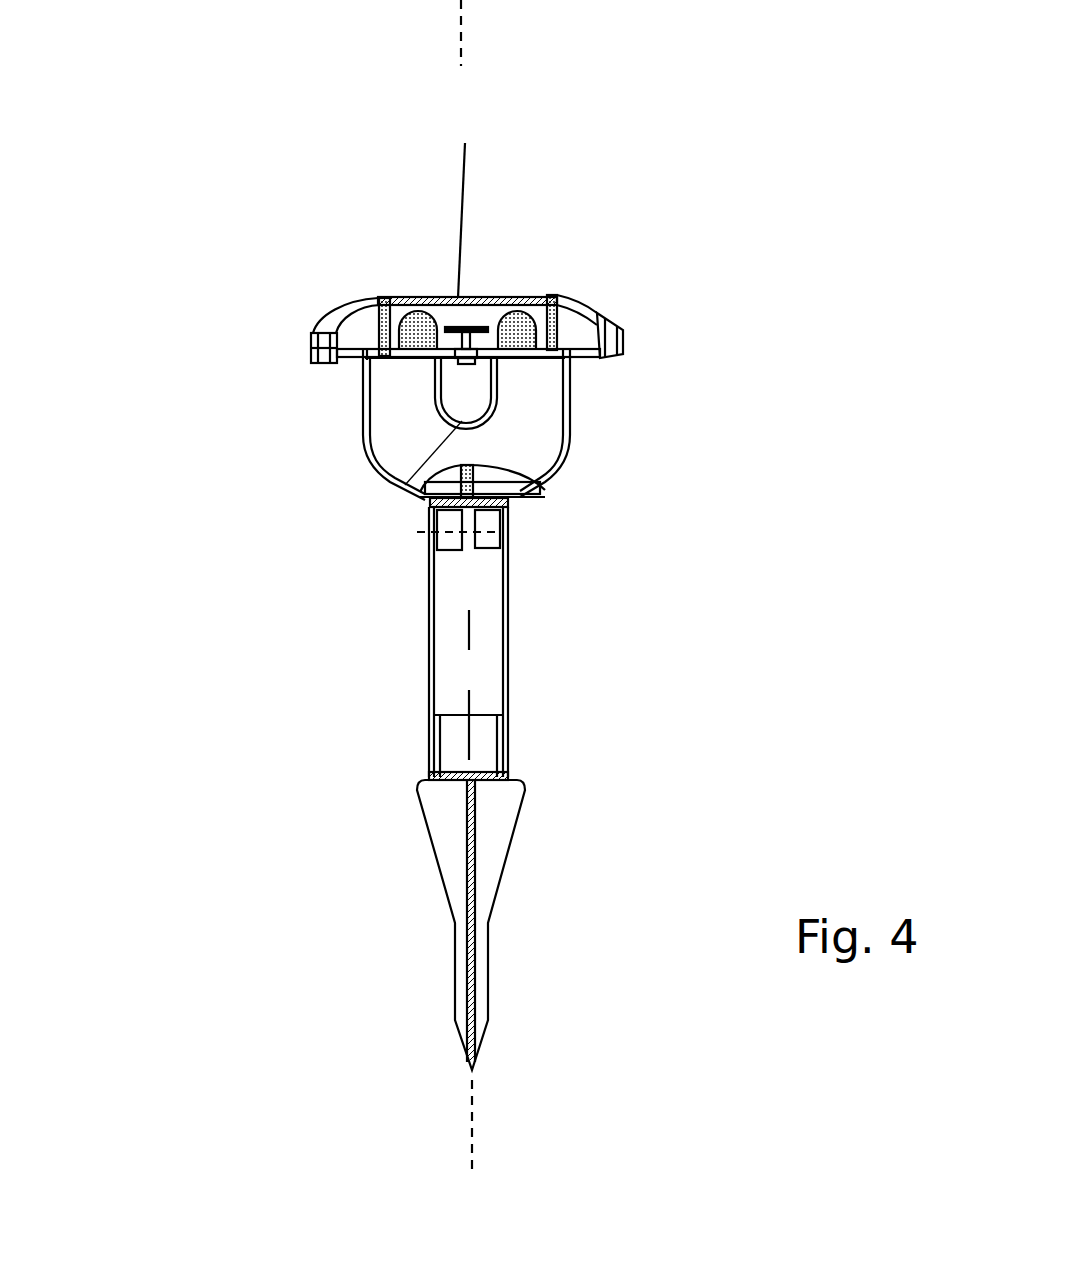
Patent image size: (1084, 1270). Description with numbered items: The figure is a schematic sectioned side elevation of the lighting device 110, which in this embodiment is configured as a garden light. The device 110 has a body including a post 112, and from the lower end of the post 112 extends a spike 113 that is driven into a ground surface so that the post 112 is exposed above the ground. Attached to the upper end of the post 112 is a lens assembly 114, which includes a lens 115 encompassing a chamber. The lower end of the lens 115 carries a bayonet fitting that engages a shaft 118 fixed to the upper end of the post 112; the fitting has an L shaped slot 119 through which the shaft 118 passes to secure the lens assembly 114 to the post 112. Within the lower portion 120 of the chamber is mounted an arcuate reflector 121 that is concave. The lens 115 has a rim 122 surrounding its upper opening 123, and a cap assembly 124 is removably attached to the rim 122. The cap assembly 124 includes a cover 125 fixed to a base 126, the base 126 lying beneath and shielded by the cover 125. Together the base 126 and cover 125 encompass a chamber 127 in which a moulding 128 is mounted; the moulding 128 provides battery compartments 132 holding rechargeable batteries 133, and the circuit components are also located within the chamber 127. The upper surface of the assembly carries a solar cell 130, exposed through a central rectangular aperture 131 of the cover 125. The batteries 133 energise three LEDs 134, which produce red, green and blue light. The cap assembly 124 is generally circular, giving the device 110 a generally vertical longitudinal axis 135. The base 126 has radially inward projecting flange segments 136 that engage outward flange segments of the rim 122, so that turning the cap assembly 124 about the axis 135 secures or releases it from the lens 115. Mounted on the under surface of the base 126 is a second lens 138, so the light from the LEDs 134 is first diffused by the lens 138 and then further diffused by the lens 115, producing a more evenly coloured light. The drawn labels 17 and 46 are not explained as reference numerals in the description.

The lighting device 110 is at (775, 437).
The post 112 is at (508, 662).
The spike 113 is at (498, 860).
The lens assembly 114 is at (388, 484).
The lens 115 is at (360, 418).
The battery 17 is at (485, 530).
The shaft 118 is at (453, 523).
The L shaped slot 119 is at (468, 548).
The lower portion 120 is at (546, 454).
The arcuate reflector 121 is at (530, 486).
The rim 122 is at (368, 372).
The upper opening 123 is at (533, 362).
The cap assembly 124 is at (639, 318).
The cover 125 is at (582, 306).
The base 126 is at (362, 360).
The chamber 127 is at (466, 298).
The moulding 128 is at (447, 297).
The solar cell 130 is at (500, 298).
The central rectangular aperture 131 is at (461, 195).
The battery compartments 132 is at (376, 298).
The rechargeable batteries 133 is at (355, 316).
The LEDs 134 is at (405, 485).
The longitudinal axis 135 is at (474, 46).
The flange segments 136 is at (367, 367).
The second lens 138 is at (466, 409).
The angle 46 is at (428, 445).